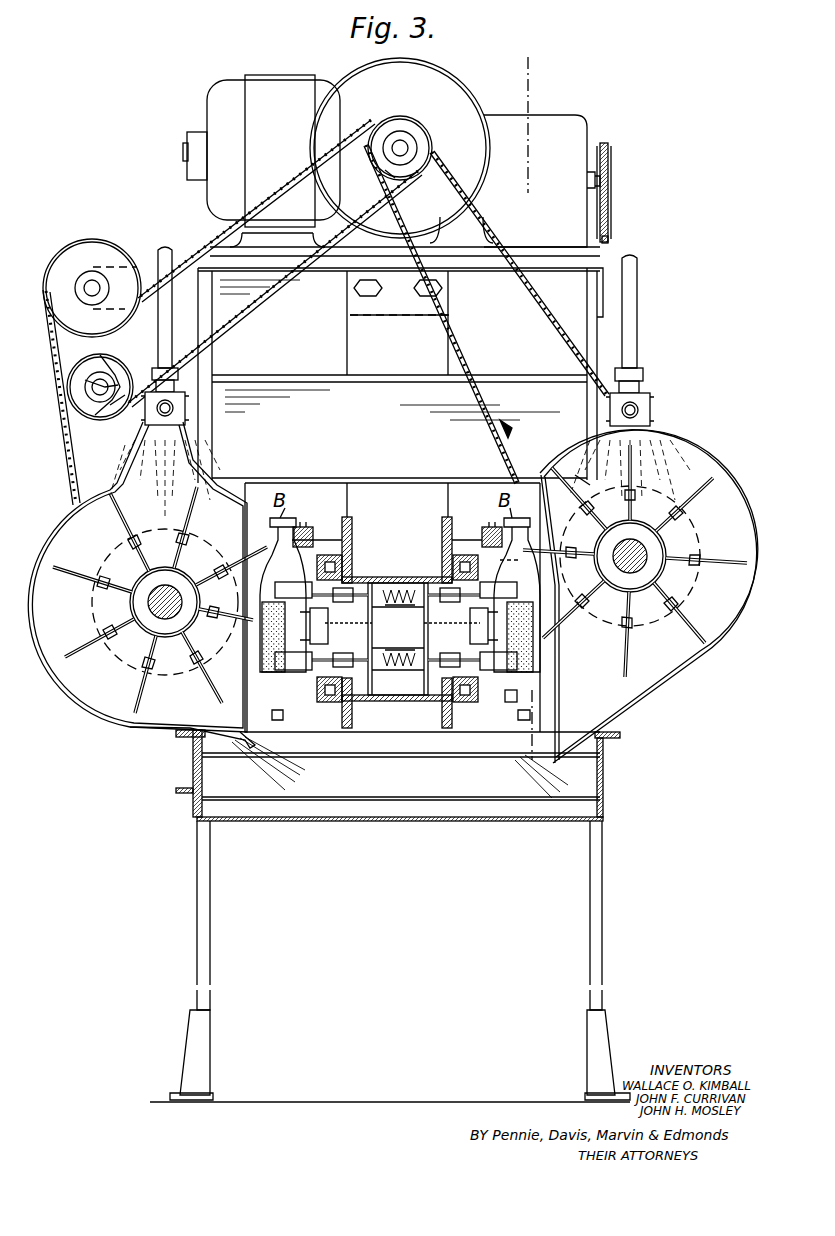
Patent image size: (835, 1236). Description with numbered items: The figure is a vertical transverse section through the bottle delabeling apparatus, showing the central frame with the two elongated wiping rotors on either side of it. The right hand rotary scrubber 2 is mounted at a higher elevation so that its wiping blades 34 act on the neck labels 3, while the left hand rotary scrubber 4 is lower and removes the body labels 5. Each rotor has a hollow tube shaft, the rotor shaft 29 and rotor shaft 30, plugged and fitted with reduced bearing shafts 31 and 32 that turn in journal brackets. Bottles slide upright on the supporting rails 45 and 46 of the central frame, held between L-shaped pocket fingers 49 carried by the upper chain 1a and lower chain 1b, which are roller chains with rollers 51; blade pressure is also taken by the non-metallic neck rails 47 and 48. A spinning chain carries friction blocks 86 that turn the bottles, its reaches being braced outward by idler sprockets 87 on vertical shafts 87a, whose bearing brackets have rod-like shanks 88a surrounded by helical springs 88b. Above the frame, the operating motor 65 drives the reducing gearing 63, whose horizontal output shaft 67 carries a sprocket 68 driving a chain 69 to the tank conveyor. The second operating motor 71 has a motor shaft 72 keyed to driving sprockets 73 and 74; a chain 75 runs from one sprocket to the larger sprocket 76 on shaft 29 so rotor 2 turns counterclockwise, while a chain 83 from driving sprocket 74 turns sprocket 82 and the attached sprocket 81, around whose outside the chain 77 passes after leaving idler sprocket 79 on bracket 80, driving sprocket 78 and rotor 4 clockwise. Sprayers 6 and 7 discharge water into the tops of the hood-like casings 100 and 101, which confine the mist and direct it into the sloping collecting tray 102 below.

The operating motor 65 is at (278, 84).
The reducing gearing 63 is at (577, 137).
The horizontal output shaft 67 is at (590, 178).
The sprocket 68 is at (608, 202).
The chain 69 is at (610, 236).
The second operating motor 71 is at (440, 82).
The driving sprocket 74 is at (387, 127).
The motor shaft 72 is at (403, 145).
The driving sprocket 73 is at (398, 182).
The chain 75 is at (497, 228).
The chain 83 is at (237, 325).
The body labels 5 is at (536, 96).
The idler sprocket 79 is at (78, 250).
The bracket 80 is at (146, 262).
The sprocket 82 is at (80, 385).
The sprocket 81 is at (125, 372).
The chain 77 is at (66, 474).
The sprayer 7 is at (185, 420).
The sprayer 6 is at (645, 410).
The hood-like casing 101 is at (68, 532).
The rotary scrubber 4 is at (95, 662).
The sprocket 78 is at (122, 550).
The rotor shaft 30 is at (152, 628).
The bearing shaft 31 is at (175, 620).
The wiping blades 34 is at (209, 555).
The hood-like casing 100 is at (707, 462).
The rotary scrubber 2 is at (724, 522).
The rotor shaft 29 is at (665, 582).
The bearing shaft 32 is at (635, 572).
The sprocket 76 is at (585, 480).
The neck labels 3 is at (520, 565).
The supporting rail 45 is at (520, 690).
The upper chain 1a is at (355, 557).
The lower chain 1b is at (358, 703).
The rod-like shank 88a is at (395, 582).
The helical spring 88b is at (432, 708).
The idler sprocket 87 is at (452, 623).
The vertical shaft 87a is at (450, 637).
The roller 51 is at (353, 563).
The friction block 86 is at (312, 628).
The pocket finger 49 is at (295, 585).
The neck rail 48 is at (295, 535).
The neck rail 47 is at (490, 535).
The supporting rail 46 is at (290, 695).
The collecting tray 102 is at (412, 821).